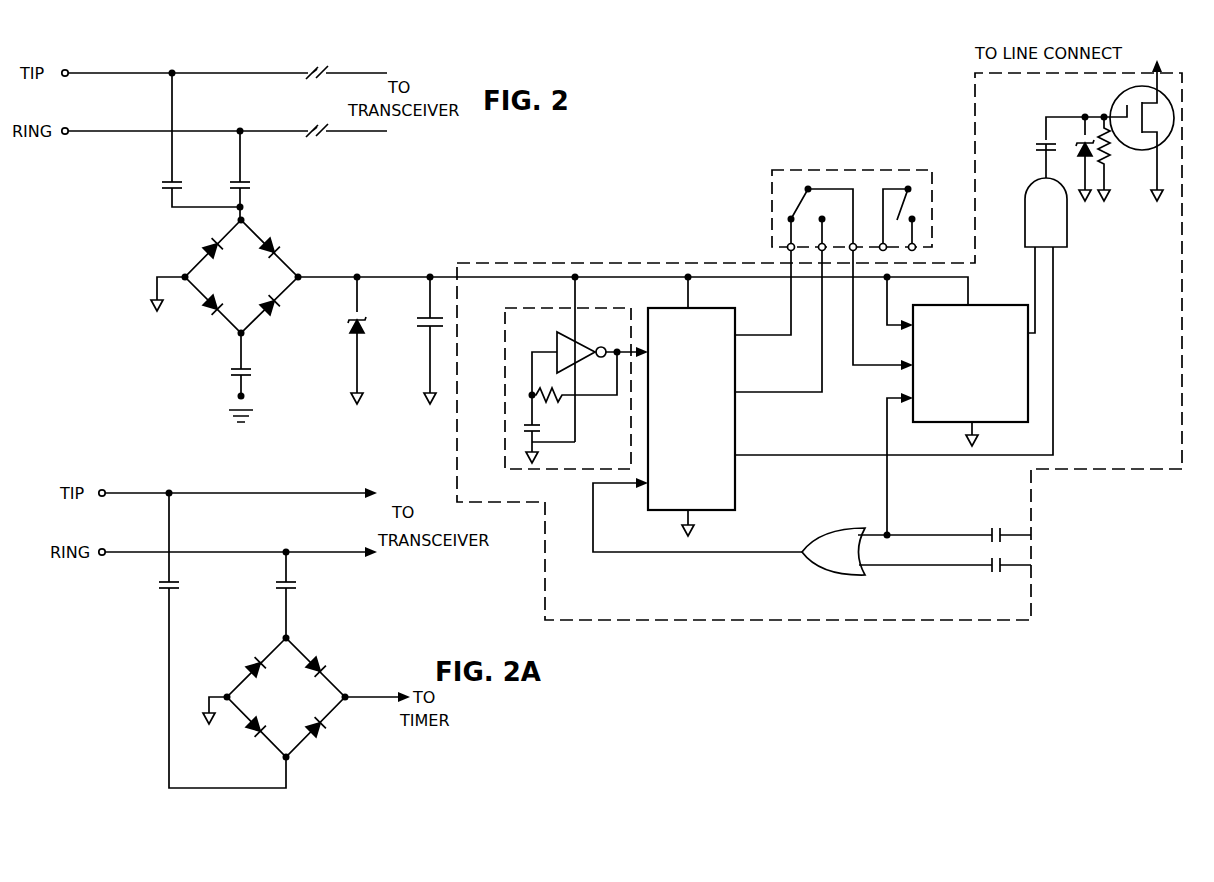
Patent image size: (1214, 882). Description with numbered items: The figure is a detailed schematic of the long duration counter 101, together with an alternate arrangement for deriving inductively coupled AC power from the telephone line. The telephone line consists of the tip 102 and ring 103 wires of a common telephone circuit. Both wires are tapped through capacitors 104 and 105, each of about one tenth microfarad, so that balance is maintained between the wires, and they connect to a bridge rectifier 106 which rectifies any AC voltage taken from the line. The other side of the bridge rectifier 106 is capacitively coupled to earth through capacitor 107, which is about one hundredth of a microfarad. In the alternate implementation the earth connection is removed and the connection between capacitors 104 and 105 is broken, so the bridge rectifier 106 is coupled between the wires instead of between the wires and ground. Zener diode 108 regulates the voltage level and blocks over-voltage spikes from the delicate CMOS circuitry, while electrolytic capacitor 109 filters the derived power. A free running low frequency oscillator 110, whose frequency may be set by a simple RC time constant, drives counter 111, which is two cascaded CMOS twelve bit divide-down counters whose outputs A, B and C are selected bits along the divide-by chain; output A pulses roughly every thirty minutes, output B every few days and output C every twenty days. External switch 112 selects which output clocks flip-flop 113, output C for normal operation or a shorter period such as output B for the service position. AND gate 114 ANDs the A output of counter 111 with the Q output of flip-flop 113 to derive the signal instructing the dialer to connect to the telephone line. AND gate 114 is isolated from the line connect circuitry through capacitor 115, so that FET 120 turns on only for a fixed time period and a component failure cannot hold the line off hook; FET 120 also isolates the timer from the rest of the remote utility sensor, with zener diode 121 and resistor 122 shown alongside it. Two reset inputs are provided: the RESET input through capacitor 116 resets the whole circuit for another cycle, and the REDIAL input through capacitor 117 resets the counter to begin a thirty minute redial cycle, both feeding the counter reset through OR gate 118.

In FIG. 2, the long duration counter 101 is at (696, 262).
In FIG. 2, the tip 102 is at (70, 78).
In FIG. 2A, the tip 102 is at (106, 497).
In FIG. 2, the ring 103 is at (70, 136).
In FIG. 2A, the ring 103 is at (106, 556).
In FIG. 2, the capacitor 104 is at (176, 180).
In FIG. 2A, the capacitor 104 is at (172, 581).
In FIG. 2, the capacitor 105 is at (244, 180).
In FIG. 2A, the capacitor 105 is at (289, 582).
In FIG. 2, the bridge rectifier 106 is at (258, 292).
In FIG. 2A, the bridge rectifier 106 is at (302, 707).
In FIG. 2, the capacitor 107 is at (247, 378).
In FIG. 2, the zener diode 108 is at (350, 326).
In FIG. 2, the electrolytic capacitor 109 is at (416, 328).
In FIG. 2, the oscillator 110 is at (503, 447).
In FIG. 2, the counter/divider 111 is at (737, 508).
In FIG. 2, the external switch 112 is at (932, 204).
In FIG. 2, the flip-flop 113 is at (994, 306).
In FIG. 2, the AND gate 114 is at (1063, 225).
In FIG. 2, the capacitor 115 is at (1040, 140).
In FIG. 2, the capacitor 116 is at (999, 531).
In FIG. 2, the capacitor 117 is at (996, 576).
In FIG. 2, the OR gate 118 is at (820, 578).
In FIG. 2, the FET 120 is at (1122, 100).
In FIG. 2, the zener diode 121 is at (1075, 150).
In FIG. 2, the resistor 122 is at (1107, 165).